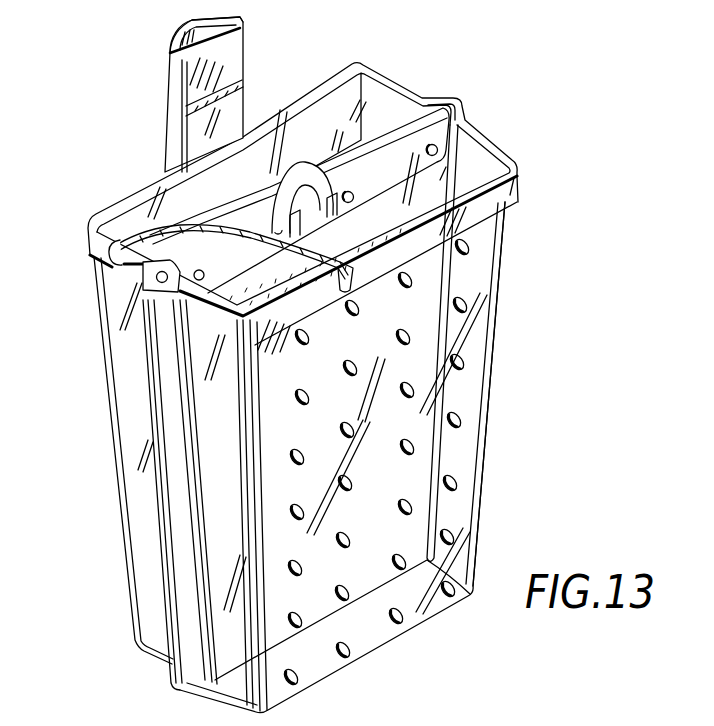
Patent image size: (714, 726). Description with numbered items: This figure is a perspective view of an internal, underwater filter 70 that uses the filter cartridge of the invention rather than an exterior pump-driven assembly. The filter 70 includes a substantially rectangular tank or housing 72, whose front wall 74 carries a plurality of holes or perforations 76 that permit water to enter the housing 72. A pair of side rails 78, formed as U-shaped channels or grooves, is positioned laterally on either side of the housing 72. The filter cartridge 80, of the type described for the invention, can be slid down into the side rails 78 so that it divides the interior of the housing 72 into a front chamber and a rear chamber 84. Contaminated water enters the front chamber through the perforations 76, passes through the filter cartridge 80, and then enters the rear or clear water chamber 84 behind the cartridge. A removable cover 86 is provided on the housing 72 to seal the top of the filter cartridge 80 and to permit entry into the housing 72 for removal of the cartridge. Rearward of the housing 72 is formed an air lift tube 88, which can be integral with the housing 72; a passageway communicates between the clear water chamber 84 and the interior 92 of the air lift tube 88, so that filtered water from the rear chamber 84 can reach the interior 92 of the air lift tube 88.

The underwater filter 70 is at (518, 392).
The housing 72 is at (482, 453).
The front wall 74 is at (418, 602).
The perforations 76 is at (347, 658).
The side rails 78 is at (460, 102).
The filter cartridge 80 is at (141, 262).
The rear chamber 84 is at (147, 240).
The removable cover 86 is at (347, 112).
The air lift tube 88 is at (166, 127).
The interior of the air lift tube 92 is at (170, 26).